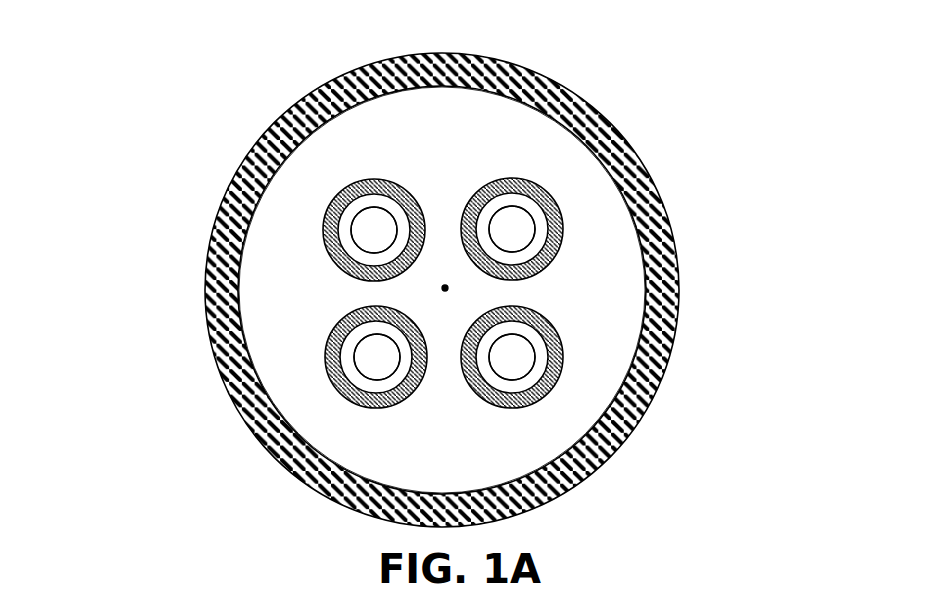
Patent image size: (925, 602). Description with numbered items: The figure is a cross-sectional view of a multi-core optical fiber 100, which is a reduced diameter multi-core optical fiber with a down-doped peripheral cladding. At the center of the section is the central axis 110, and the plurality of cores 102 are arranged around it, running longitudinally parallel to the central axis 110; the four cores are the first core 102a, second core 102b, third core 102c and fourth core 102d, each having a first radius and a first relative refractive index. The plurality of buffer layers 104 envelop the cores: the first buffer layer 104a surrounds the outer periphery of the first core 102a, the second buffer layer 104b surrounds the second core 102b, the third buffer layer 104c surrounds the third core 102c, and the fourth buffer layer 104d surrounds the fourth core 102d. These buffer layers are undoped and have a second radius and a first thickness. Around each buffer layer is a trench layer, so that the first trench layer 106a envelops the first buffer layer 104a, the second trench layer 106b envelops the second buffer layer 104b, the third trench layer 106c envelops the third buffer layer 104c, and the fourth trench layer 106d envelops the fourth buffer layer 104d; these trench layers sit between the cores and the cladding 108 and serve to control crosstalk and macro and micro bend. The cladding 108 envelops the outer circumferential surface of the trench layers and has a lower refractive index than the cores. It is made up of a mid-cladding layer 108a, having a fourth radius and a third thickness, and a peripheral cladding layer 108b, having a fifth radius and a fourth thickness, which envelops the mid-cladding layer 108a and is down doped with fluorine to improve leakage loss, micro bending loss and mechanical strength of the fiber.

The multi-core optical fiber 100 is at (207, 54).
The plurality of cores 102 is at (107, 175).
The first core 102a is at (340, 228).
The second core 102b is at (477, 268).
The third core 102c is at (473, 387).
The fourth core 102d is at (350, 358).
The plurality of buffer layers 104 is at (785, 145).
The first buffer layer 104a is at (370, 200).
The second buffer layer 104b is at (528, 205).
The third buffer layer 104c is at (538, 348).
The fourth buffer layer 104d is at (385, 330).
The first trench layer 106a is at (375, 182).
The second trench layer 106b is at (552, 262).
The third trench layer 106c is at (513, 405).
The fourth trench layer 106d is at (348, 395).
The cladding 108 is at (776, 8).
The mid-cladding layer 108a is at (523, 133).
The peripheral cladding layer 108b is at (543, 80).
The central axis 110 is at (445, 288).